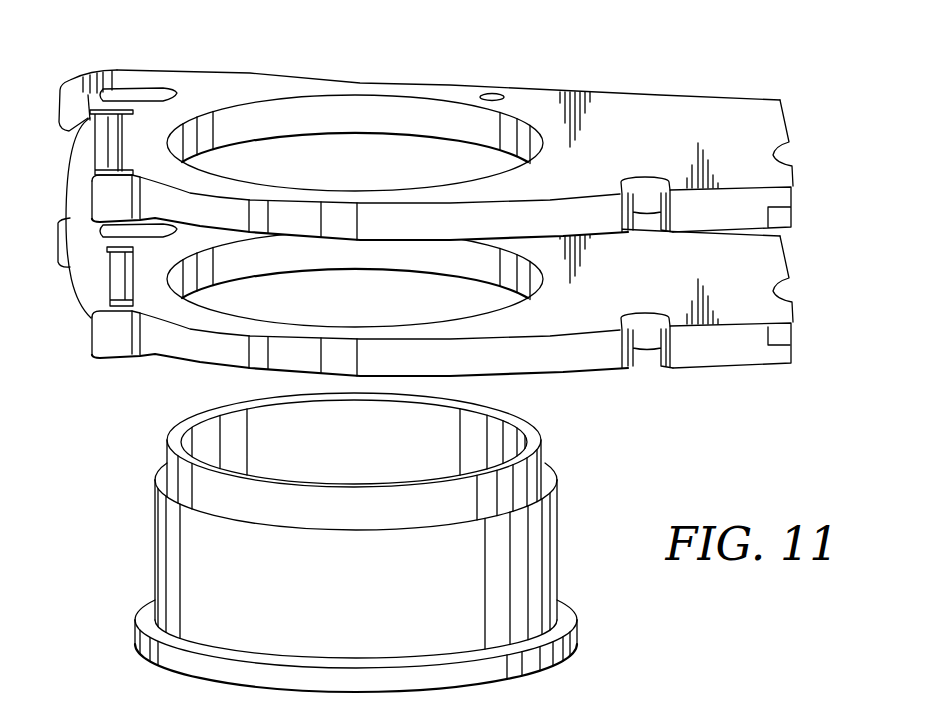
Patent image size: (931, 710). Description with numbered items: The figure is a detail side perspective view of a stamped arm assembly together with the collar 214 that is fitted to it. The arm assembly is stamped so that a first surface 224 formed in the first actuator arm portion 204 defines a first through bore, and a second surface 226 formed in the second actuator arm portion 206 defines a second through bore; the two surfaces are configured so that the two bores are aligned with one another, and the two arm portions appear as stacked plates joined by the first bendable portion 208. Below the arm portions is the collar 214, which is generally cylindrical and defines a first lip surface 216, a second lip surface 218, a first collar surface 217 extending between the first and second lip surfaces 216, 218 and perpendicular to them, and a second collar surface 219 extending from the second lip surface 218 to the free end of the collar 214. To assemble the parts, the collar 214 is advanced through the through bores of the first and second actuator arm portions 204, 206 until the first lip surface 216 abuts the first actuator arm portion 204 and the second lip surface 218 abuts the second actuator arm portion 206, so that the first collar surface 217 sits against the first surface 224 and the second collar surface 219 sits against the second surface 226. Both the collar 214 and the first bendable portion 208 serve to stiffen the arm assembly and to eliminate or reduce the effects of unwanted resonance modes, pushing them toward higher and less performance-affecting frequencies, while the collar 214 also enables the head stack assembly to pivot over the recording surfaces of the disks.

The first actuator arm portion 204 is at (710, 358).
The second actuator arm portion 206 is at (700, 106).
The first bendable portion 208 is at (77, 278).
The collar 214 is at (353, 542).
The first lip surface 216 is at (567, 617).
The first collar surface 217 is at (157, 597).
The second lip surface 218 is at (546, 480).
The second collar surface 219 is at (177, 470).
The first surface 224 is at (463, 262).
The second surface 226 is at (350, 116).